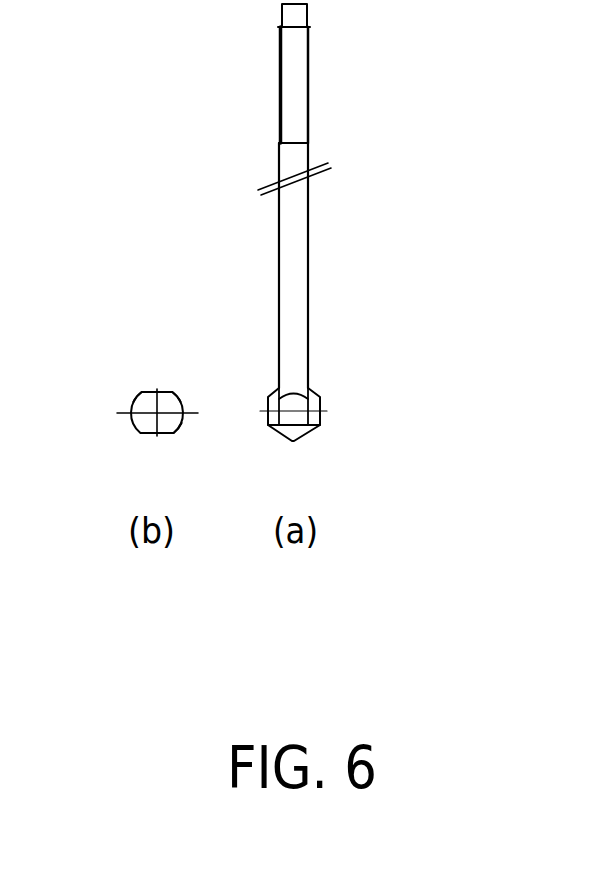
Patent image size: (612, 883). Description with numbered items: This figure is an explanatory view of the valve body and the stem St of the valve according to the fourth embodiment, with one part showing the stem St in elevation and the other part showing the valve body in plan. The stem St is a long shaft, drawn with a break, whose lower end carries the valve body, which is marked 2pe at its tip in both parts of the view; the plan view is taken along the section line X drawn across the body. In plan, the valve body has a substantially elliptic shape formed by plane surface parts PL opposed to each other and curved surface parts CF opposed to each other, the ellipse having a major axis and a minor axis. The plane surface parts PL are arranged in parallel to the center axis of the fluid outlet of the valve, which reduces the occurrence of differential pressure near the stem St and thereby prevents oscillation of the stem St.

The stem St is at (302, 252).
The pin end portion 2pe is at (316, 394).
The section line X- X is at (291, 411).
The plane surface parts PL is at (138, 428).
The curved surface parts CF is at (126, 394).